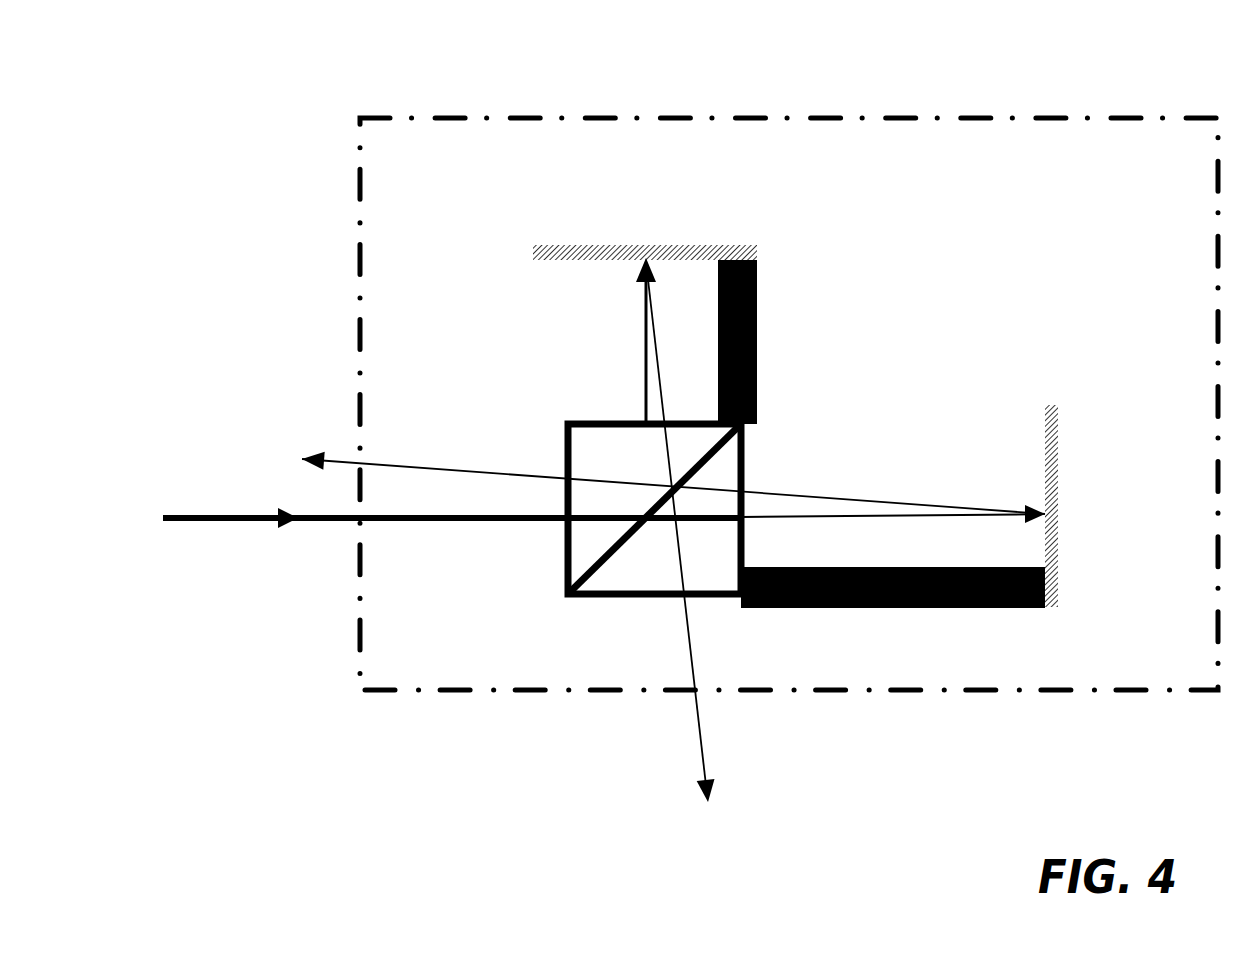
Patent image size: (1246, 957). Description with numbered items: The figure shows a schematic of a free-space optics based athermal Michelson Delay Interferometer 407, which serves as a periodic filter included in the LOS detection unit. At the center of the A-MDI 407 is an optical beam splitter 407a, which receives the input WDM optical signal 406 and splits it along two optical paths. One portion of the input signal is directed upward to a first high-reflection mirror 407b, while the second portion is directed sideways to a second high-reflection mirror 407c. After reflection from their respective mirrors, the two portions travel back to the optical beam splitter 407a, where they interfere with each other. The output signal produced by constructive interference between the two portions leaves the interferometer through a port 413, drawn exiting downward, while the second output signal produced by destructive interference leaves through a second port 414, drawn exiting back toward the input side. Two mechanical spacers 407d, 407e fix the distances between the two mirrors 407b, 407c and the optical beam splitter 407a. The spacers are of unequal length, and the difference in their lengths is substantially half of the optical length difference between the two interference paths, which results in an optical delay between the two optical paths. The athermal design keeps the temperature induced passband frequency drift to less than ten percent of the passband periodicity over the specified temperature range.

The athermal Michelson Delay Interferometer 407 is at (789, 366).
The optical beam splitter 407a is at (623, 512).
The first high-reflection mirror 407b is at (645, 213).
The second high-reflection mirror 407c is at (1108, 506).
The first mechanical spacer 407d is at (785, 342).
The second mechanical spacer 407e is at (893, 603).
The input WDM optical signal 406 is at (604, 411).
The port 413 is at (717, 532).
The second port 414 is at (655, 443).